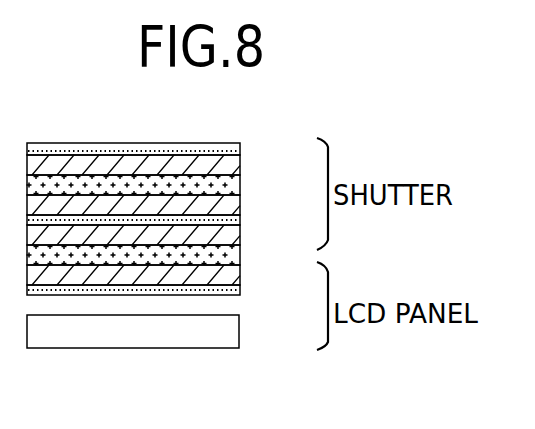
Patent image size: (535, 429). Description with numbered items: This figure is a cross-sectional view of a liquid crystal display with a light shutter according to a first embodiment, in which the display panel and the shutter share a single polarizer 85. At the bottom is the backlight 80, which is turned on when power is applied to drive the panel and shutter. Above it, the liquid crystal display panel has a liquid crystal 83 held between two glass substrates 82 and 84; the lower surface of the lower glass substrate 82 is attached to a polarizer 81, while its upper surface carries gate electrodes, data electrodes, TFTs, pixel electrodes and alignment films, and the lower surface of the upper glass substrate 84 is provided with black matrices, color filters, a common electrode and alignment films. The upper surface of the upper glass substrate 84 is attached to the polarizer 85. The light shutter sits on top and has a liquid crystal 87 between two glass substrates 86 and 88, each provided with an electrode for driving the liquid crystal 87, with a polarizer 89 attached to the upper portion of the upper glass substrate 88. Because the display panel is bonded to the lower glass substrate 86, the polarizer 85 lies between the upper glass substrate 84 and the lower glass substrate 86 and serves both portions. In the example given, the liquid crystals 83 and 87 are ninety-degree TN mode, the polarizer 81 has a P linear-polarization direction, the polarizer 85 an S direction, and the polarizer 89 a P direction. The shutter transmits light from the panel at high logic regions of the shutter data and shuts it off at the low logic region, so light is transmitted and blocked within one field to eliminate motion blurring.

The backlight 80 is at (235, 338).
The polarizer 81 is at (239, 294).
The lower glass substrate 82 is at (241, 283).
The liquid crystal 83 is at (241, 265).
The upper glass substrate 84 is at (241, 241).
The polarizer 85 is at (241, 225).
The lower glass substrate 86 is at (241, 208).
The liquid crystal 87 is at (241, 186).
The upper glass substrate 88 is at (241, 165).
The polarizer 89 is at (241, 151).